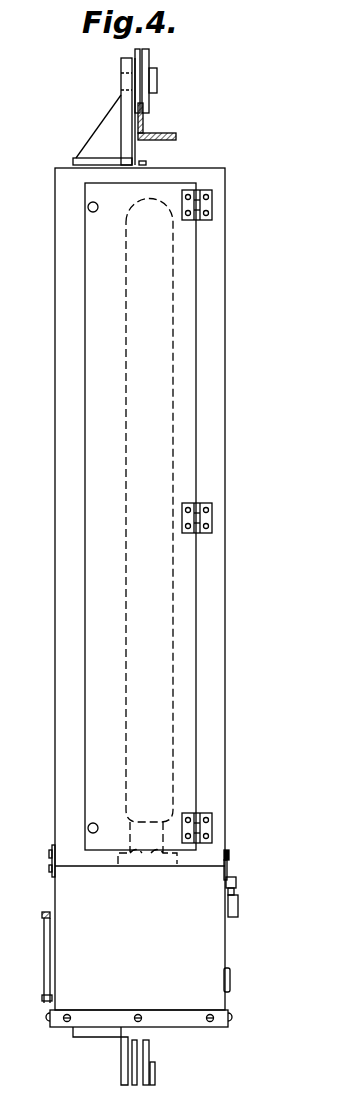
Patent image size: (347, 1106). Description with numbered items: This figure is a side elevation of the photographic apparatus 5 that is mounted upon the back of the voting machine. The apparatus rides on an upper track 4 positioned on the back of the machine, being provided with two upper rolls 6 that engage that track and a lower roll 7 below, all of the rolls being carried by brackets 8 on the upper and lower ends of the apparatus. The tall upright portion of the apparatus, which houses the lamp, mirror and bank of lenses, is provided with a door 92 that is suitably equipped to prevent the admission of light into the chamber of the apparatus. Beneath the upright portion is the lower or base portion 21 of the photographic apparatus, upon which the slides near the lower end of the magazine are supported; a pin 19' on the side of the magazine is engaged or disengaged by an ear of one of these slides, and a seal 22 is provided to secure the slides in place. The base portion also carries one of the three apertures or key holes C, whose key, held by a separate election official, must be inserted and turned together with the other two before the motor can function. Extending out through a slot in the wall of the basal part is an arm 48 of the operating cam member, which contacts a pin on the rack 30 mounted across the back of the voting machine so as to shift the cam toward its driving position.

The upper track 4 is at (147, 122).
The photographic apparatus 5 is at (50, 580).
The upper rolls 6 is at (150, 60).
The lower roll 7 is at (151, 1052).
The brackets 8 is at (127, 150).
The pin 19' is at (252, 860).
The base portion 21 is at (129, 916).
The seal 22 is at (240, 905).
The rack 30 is at (42, 912).
The arm 48 is at (40, 1000).
The door 92 is at (187, 600).
The key hole C is at (232, 982).